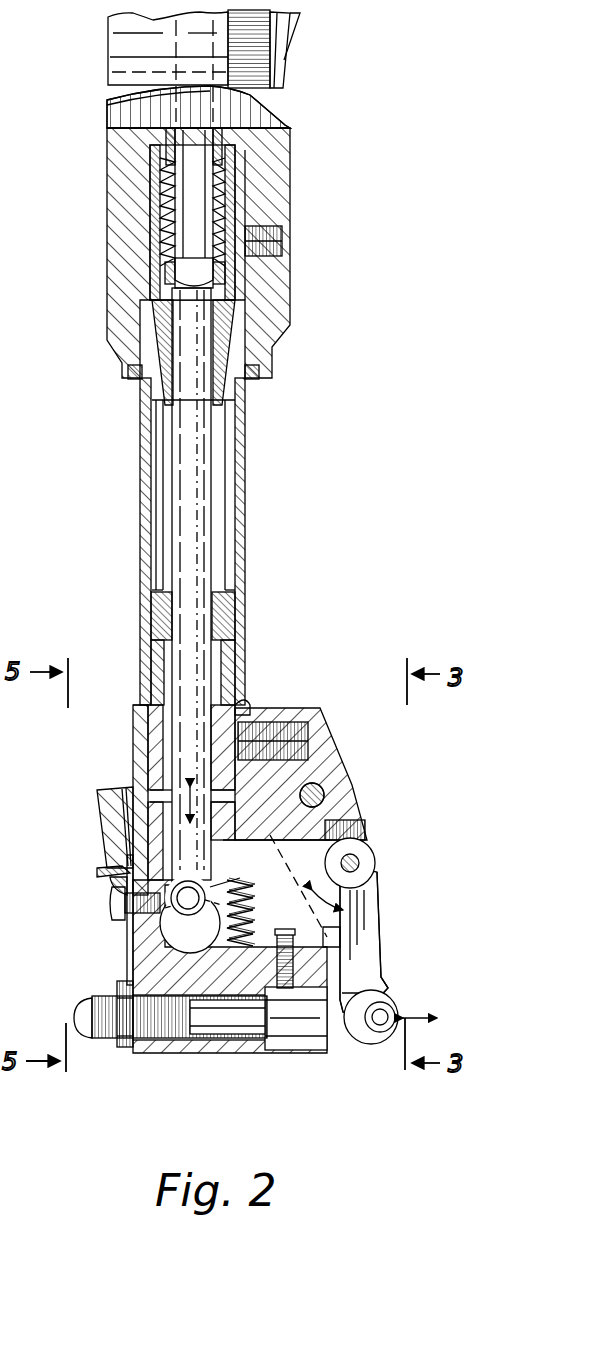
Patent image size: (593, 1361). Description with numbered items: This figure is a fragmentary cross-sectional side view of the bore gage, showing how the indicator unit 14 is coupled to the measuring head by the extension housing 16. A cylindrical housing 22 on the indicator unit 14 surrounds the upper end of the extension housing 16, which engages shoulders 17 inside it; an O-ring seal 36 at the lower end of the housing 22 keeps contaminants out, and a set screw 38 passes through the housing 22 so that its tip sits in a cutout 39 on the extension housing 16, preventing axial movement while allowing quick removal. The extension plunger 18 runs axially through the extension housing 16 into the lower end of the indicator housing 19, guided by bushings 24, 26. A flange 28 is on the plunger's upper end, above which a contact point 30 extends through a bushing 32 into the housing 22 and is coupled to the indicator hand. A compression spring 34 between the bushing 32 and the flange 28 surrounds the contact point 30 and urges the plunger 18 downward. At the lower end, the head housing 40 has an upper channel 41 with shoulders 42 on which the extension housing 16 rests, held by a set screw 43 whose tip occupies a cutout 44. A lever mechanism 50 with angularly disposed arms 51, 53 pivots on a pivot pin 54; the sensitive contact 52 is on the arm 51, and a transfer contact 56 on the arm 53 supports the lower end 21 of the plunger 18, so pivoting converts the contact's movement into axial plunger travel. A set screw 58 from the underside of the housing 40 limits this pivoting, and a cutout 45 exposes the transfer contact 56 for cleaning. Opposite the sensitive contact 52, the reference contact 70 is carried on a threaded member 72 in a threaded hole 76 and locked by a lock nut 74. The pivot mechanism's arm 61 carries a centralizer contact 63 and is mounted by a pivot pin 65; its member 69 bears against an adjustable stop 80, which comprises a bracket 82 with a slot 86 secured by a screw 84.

The indicator unit 14 is at (292, 52).
The indicator housing 19 is at (108, 55).
The cylindrical housing 22 is at (108, 192).
The bushing 32 is at (230, 140).
The shoulders 17 is at (255, 160).
The compression spring 34 is at (226, 200).
The contact point 30 is at (190, 212).
The cutout 39 is at (250, 222).
The set screw 38 is at (284, 248).
The flange 28 is at (180, 276).
The bushing 26 is at (150, 380).
The O-ring seal 36 is at (254, 380).
The extension housing 16 is at (246, 485).
The extension plunger 18 is at (190, 520).
The bushing 24 is at (160, 600).
The shoulders 42 is at (240, 702).
The cutout 44 is at (265, 708).
The upper channel 41 is at (136, 712).
The housing 40 is at (132, 740).
The set screw 43 is at (318, 752).
The member 69 is at (103, 795).
The pivot pin 65 is at (336, 792).
The adjustable stop 80 is at (112, 865).
The arm 53 is at (345, 835).
The lever mechanism 50 is at (372, 840).
The pivot pin 54 is at (358, 866).
The arm 51 is at (380, 900).
The bracket 82 is at (118, 882).
The screw 84 is at (112, 905).
The slot 86 is at (128, 925).
The arm 61 is at (384, 975).
The lower end 21 is at (130, 952).
The transfer contact 56 is at (130, 968).
The sensitive contact 52 is at (388, 1004).
The reference contact 70 is at (78, 1018).
The threaded member 72 is at (98, 1044).
The lock nut 74 is at (122, 1055).
The cutout 45 is at (240, 1000).
The set screw 58 is at (288, 1055).
The threaded hole 76 is at (212, 1045).
The centralizer contact 63 is at (374, 1044).